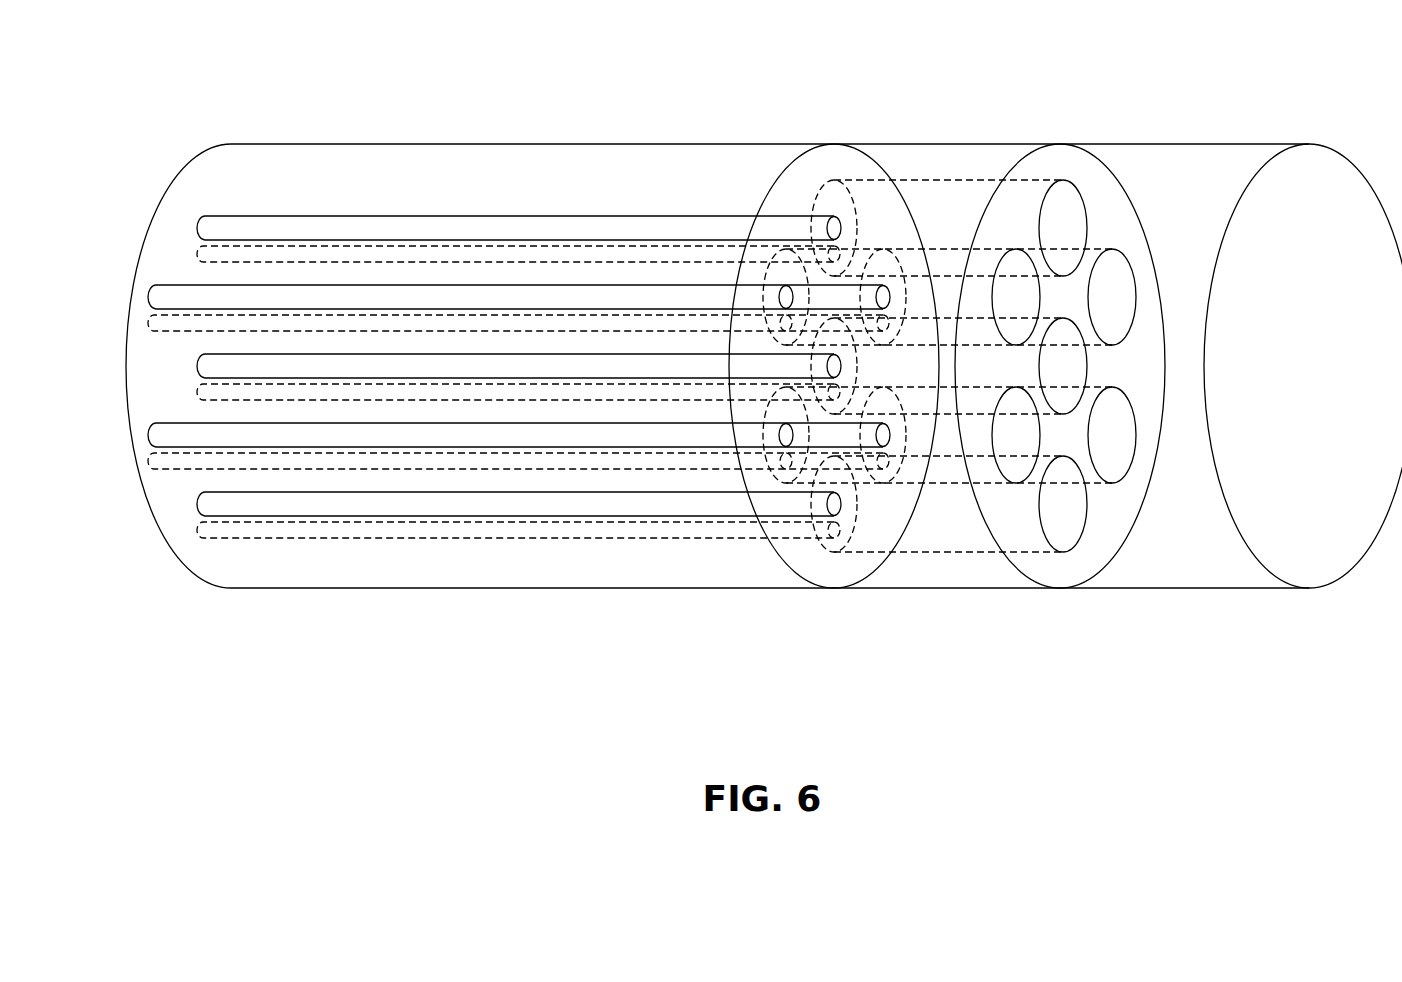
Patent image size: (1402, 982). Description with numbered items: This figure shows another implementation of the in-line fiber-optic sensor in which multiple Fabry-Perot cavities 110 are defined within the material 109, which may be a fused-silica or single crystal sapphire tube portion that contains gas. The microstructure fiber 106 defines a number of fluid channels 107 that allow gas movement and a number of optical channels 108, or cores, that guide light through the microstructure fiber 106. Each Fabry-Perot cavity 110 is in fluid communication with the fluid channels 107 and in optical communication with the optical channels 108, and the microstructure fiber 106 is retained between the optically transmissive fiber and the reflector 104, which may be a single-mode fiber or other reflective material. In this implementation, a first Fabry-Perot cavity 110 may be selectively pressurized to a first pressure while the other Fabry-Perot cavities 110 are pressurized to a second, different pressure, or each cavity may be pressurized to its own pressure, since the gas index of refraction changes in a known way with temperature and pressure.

The reflector 104 is at (1178, 162).
The microstructure fiber 106 is at (550, 165).
The fluid channels 107 is at (393, 529).
The optical channels 108 is at (552, 504).
The material 109 is at (909, 162).
The Fabry-Perot cavities 110 is at (965, 202).